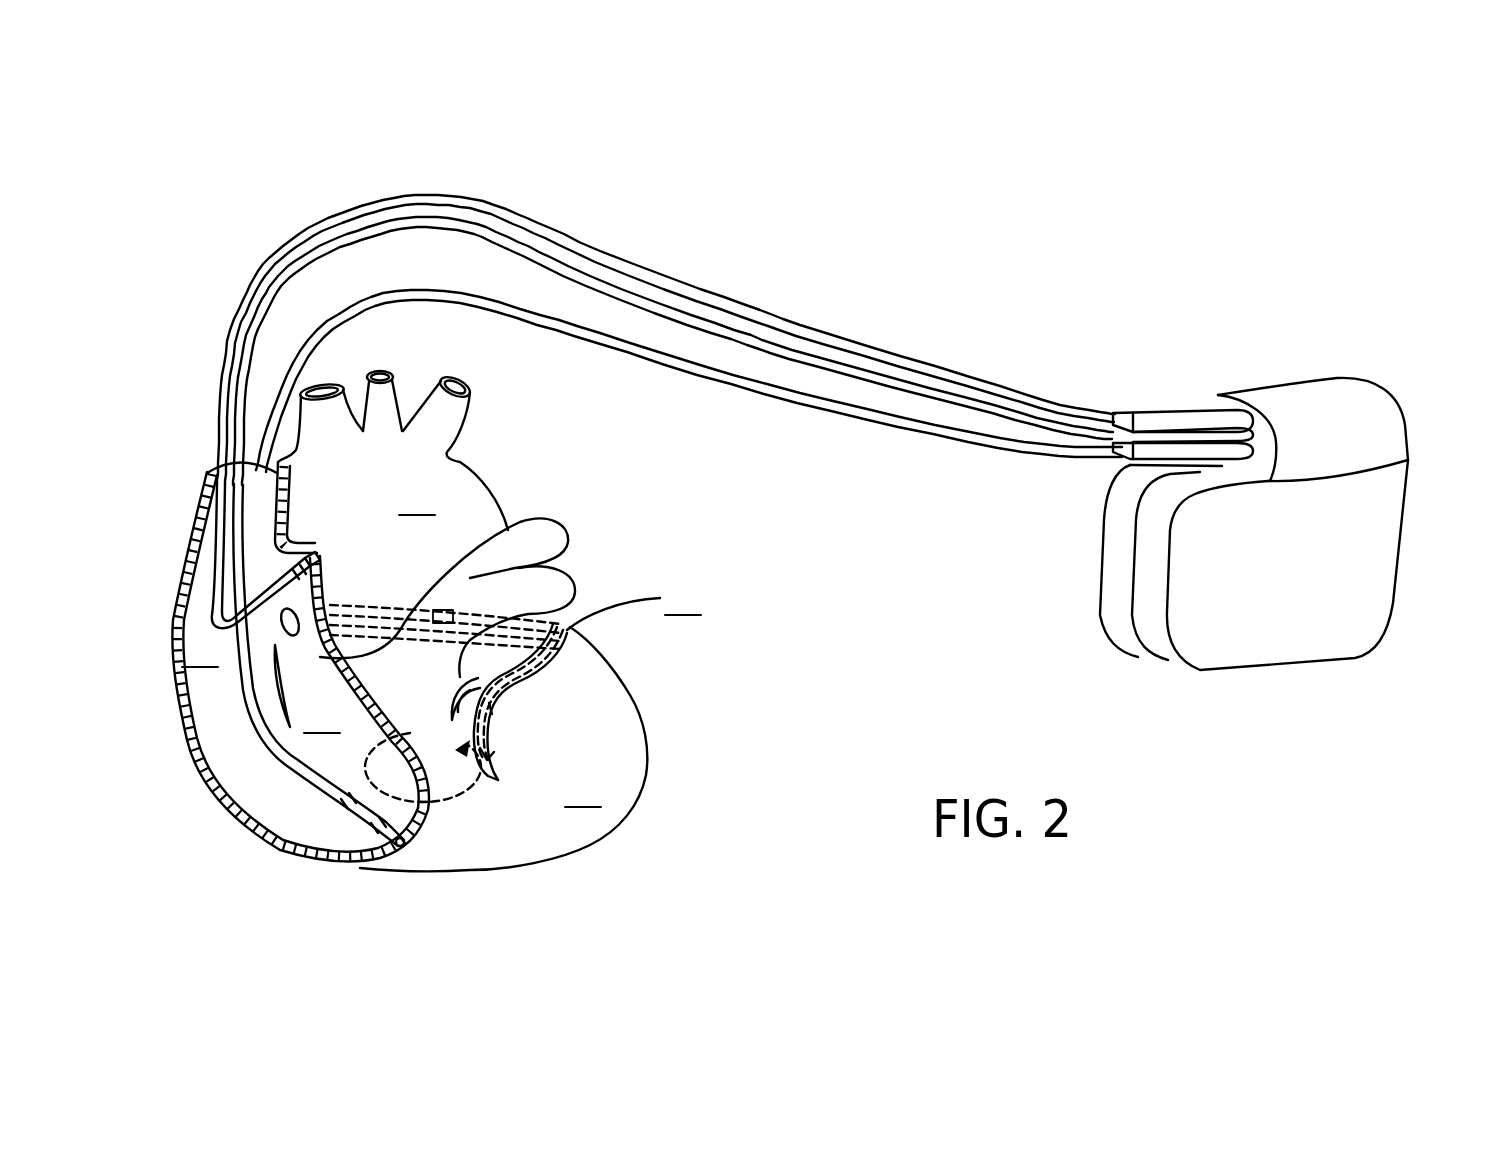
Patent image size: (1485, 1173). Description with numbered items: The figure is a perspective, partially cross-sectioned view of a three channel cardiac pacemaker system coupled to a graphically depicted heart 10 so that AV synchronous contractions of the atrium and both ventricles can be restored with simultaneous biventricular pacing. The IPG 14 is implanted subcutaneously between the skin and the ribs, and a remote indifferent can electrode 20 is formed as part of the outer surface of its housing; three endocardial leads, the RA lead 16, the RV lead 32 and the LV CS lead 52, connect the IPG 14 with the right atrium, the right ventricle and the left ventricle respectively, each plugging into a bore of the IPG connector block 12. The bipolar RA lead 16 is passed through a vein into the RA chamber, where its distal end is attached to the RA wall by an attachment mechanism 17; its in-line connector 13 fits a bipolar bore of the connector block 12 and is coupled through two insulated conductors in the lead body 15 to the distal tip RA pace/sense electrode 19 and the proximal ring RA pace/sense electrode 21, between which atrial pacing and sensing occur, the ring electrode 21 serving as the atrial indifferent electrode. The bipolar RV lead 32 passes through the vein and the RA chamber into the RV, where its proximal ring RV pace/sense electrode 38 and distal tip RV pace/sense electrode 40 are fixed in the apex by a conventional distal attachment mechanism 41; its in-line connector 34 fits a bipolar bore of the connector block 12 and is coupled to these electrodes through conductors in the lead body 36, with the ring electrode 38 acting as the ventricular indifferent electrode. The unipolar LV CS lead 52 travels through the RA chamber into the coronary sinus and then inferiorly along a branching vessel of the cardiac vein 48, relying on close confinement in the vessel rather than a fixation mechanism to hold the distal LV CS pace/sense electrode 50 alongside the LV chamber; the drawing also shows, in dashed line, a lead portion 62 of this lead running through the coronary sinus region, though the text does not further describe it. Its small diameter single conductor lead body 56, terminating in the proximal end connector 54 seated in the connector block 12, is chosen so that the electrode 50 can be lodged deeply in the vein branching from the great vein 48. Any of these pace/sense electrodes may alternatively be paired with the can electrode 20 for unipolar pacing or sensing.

The heart 10 is at (750, 748).
The IPG connector block 12 is at (1340, 400).
The in-line connector 13 is at (1190, 410).
The IPG 14 is at (1422, 528).
The lead body 15 is at (777, 316).
The RA lead 16 is at (492, 193).
The attachment mechanism 17 is at (324, 553).
The distal tip RA pace/sense electrode 19 is at (264, 568).
The remote indifferent can electrode 20 is at (1303, 637).
The proximal ring RA pace/sense electrode 21 is at (292, 603).
The RV lead 32 is at (560, 288).
The in-line connector 34 is at (1177, 433).
The lead body 36 is at (613, 280).
The proximal ring RV pace/sense electrode 38 is at (347, 804).
The distal tip RV pace/sense electrode 40 is at (380, 830).
The distal attachment mechanism 41 is at (405, 846).
The cardiac vein 48 is at (493, 708).
The distal LV CS pace/sense electrode 50 is at (490, 755).
The LV CS lead 52 is at (628, 364).
The proximal end connector 54 is at (1167, 447).
The lead body 56 is at (893, 427).
The lead body portion in coronary sinus 62 is at (470, 605).